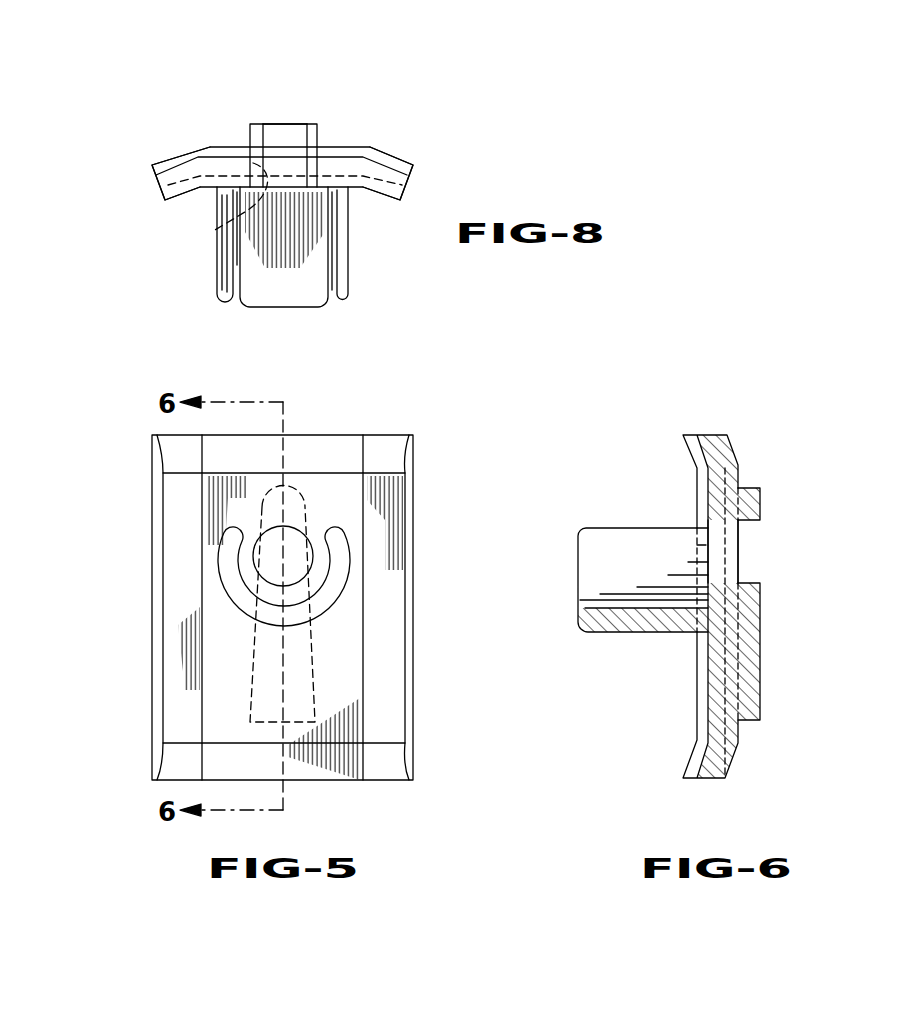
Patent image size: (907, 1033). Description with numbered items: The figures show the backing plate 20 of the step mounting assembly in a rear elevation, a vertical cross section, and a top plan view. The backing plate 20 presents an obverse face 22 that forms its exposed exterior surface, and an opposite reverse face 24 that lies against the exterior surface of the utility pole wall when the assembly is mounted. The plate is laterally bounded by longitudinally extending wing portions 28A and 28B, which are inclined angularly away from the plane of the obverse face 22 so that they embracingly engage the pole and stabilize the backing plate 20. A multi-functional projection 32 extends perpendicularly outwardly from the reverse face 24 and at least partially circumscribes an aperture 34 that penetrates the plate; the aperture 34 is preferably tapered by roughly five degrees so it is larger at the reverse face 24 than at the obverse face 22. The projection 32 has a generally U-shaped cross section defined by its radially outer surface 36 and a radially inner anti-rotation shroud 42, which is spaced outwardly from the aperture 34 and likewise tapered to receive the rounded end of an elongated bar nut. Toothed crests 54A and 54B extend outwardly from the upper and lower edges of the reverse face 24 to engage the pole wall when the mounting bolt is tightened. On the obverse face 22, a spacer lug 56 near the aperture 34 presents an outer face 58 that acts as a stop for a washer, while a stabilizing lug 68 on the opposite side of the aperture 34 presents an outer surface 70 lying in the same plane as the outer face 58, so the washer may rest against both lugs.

In FIG. 8, the backing plate 20 is at (140, 158).
In FIG. 5, the backing plate 20 is at (376, 425).
In FIG. 8, the obverse face 22 is at (210, 145).
In FIG. 6, the obverse face 22 is at (738, 733).
In FIG. 8, the reverse face 24 is at (310, 187).
In FIG. 5, the reverse face 24 is at (335, 690).
In FIG. 6, the reverse face 24 is at (712, 698).
In FIG. 8, the wing portion 28A is at (390, 176).
In FIG. 5, the wing portion 28A is at (385, 722).
In FIG. 8, the wing portion 28B is at (168, 182).
In FIG. 5, the wing portion 28B is at (180, 715).
In FIG. 8, the multi-functional projection 32 is at (365, 285).
In FIG. 5, the multi-functional projection 32 is at (347, 588).
In FIG. 6, the multi-functional projection 32 is at (588, 634).
In FIG. 8, the aperture 34 is at (212, 231).
In FIG. 5, the aperture 34 is at (270, 547).
In FIG. 6, the aperture 34 is at (748, 560).
In FIG. 8, the radially outer surface 36 is at (217, 278).
In FIG. 5, the radially outer surface 36 is at (342, 600).
In FIG. 6, the radially outer surface 36 is at (650, 630).
In FIG. 8, the anti-rotation shroud 42 is at (250, 270).
In FIG. 5, the anti-rotation shroud 42 is at (238, 548).
In FIG. 6, the anti-rotation shroud 42 is at (626, 553).
In FIG. 5, the toothed crest 54A is at (178, 437).
In FIG. 6, the toothed crest 54A is at (684, 436).
In FIG. 5, the toothed crest 54B is at (180, 778).
In FIG. 6, the toothed crest 54B is at (690, 778).
In FIG. 8, the spacer lug 56 is at (287, 133).
In FIG. 5, the spacer lug 56 is at (293, 505).
In FIG. 6, the spacer lug 56 is at (748, 498).
In FIG. 8, the outer face 58 is at (283, 123).
In FIG. 6, the outer face 58 is at (760, 497).
In FIG. 8, the stabilizing lug 68 is at (310, 123).
In FIG. 5, the stabilizing lug 68 is at (272, 640).
In FIG. 6, the stabilizing lug 68 is at (748, 667).
In FIG. 8, the outer surface 70 is at (252, 122).
In FIG. 6, the outer surface 70 is at (760, 620).